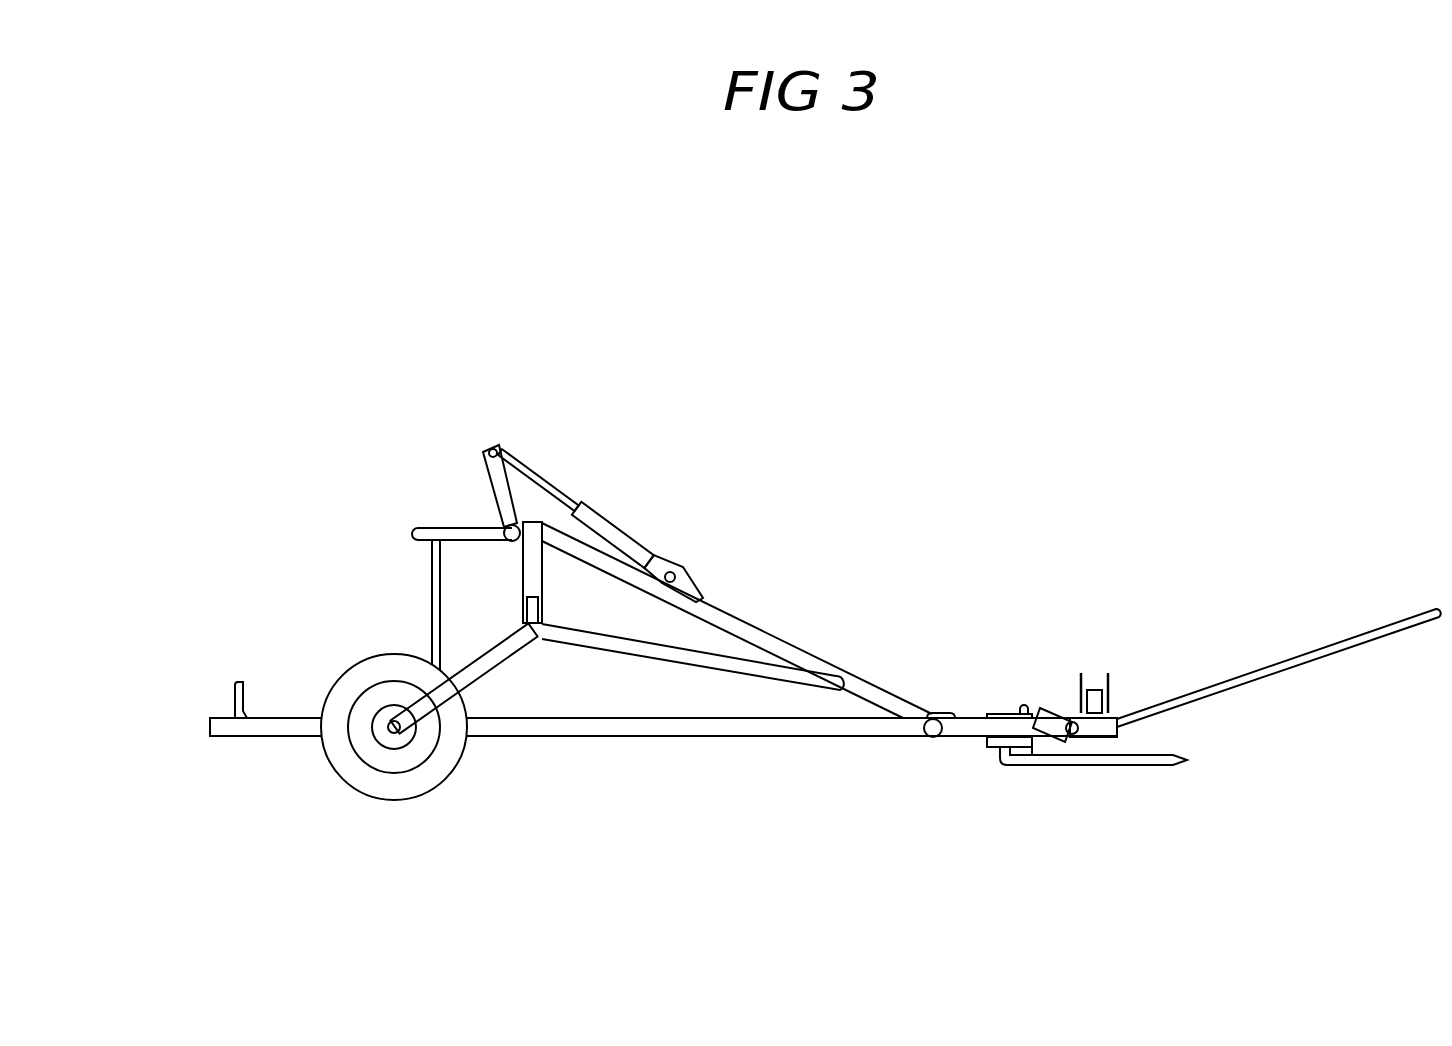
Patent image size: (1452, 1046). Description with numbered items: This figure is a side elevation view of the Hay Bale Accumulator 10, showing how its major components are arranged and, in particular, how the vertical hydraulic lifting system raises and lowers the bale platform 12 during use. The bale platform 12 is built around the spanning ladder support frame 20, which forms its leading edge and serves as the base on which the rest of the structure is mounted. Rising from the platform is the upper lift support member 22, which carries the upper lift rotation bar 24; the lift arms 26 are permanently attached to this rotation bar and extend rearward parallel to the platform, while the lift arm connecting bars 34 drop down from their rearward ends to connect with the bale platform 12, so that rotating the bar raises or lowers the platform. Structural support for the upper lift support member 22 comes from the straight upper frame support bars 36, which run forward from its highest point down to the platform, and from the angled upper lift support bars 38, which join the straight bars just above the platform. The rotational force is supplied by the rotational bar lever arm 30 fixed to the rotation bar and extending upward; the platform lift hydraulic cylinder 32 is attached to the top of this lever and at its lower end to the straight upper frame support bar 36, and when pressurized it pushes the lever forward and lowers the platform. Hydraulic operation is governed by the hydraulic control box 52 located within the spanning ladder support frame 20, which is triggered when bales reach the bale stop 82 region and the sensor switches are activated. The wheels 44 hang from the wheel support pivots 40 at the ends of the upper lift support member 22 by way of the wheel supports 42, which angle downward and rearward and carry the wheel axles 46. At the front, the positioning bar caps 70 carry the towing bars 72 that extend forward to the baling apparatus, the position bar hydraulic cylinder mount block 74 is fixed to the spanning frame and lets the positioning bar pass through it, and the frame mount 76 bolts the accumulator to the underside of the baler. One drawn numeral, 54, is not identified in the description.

The Hay Bale Accumulator 10 is at (278, 565).
The bale platform 12 is at (538, 742).
The spanning ladder support frame 20 is at (963, 747).
The upper lift support member 22 is at (539, 515).
The upper lift rotation bar 24 is at (506, 548).
The lift arms 26 is at (458, 523).
The rotational bar lever arm 30 is at (488, 440).
The platform lift hydraulic cylinder 32 is at (628, 526).
The lift arm connecting bars 34 is at (427, 597).
The straight upper frame support bars 36 is at (780, 632).
The angled upper lift support bars 38 is at (690, 638).
The wheel support pivots 40 is at (541, 603).
The wheel supports 42 is at (505, 672).
The wheels 44 is at (332, 786).
The wheel axles 46 is at (392, 736).
The hydraulic control box 52 is at (998, 708).
The tube 54 is at (1082, 768).
The positioning bar caps 70 is at (1102, 743).
The towing bars 72 is at (1292, 675).
The position bar hydraulic cylinder mount block 74 is at (1067, 708).
The frame mount 76 is at (1115, 677).
The bale stop 82 is at (232, 688).